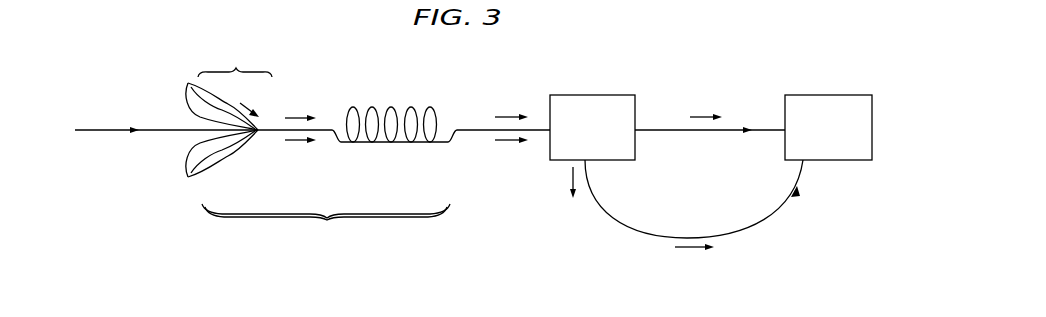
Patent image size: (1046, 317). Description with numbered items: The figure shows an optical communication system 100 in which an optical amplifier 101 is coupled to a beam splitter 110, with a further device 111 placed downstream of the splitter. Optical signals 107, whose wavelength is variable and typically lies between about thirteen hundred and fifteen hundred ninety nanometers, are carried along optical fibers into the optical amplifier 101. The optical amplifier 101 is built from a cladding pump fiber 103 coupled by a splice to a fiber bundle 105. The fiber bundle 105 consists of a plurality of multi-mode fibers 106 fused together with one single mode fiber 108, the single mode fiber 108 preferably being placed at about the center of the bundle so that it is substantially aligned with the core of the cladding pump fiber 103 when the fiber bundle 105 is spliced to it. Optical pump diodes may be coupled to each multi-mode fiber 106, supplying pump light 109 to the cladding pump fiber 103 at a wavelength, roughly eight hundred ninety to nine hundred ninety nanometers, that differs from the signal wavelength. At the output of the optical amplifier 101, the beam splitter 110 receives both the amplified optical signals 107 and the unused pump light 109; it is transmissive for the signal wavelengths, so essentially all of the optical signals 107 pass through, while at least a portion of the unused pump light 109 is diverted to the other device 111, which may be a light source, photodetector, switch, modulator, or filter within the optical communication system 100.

The optical communication system 100 is at (448, 283).
The optical amplifier 101 is at (326, 226).
The cladding pump fiber 103 is at (398, 107).
The fiber bundle 105 is at (235, 62).
The multi-mode fibers 106 is at (206, 130).
The optical signals 107 is at (110, 173).
The single mode fiber 108 is at (152, 128).
The pump light 109 is at (310, 86).
The beam splitter 110 is at (623, 95).
The devices 111 is at (853, 95).